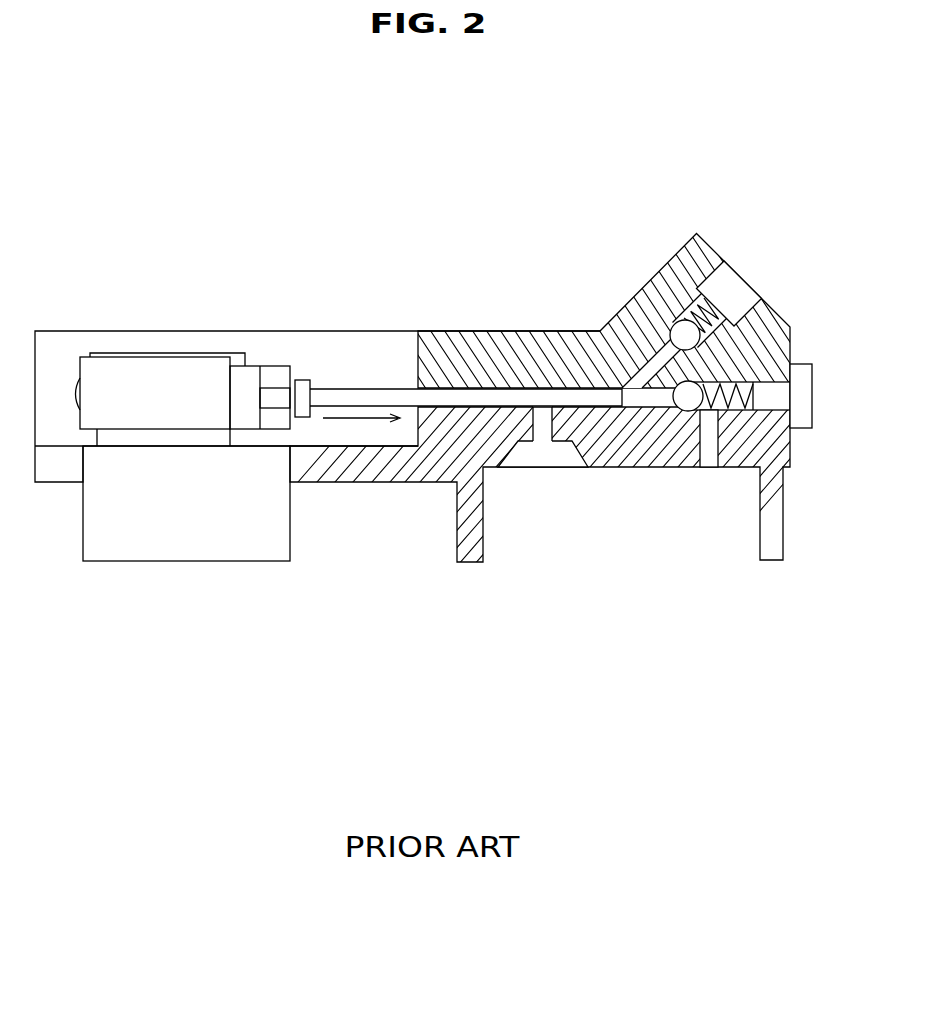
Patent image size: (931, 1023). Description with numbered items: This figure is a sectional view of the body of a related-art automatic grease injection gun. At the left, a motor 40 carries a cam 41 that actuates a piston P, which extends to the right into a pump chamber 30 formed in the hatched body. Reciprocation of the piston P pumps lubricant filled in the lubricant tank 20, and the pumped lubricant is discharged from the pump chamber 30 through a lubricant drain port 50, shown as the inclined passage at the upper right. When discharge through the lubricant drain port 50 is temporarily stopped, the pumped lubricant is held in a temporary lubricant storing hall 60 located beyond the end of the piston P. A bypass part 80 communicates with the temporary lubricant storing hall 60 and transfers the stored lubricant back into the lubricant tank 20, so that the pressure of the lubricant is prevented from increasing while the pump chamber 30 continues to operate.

The lubricant tank 20 is at (550, 458).
The pump chamber 30 is at (470, 332).
The motor 40 is at (140, 533).
The cam 41 is at (143, 385).
The lubricant drain port 50 is at (638, 292).
The temporary lubricant storing hall 60 is at (647, 400).
The bypass part 80 is at (713, 457).
The piston P is at (368, 387).